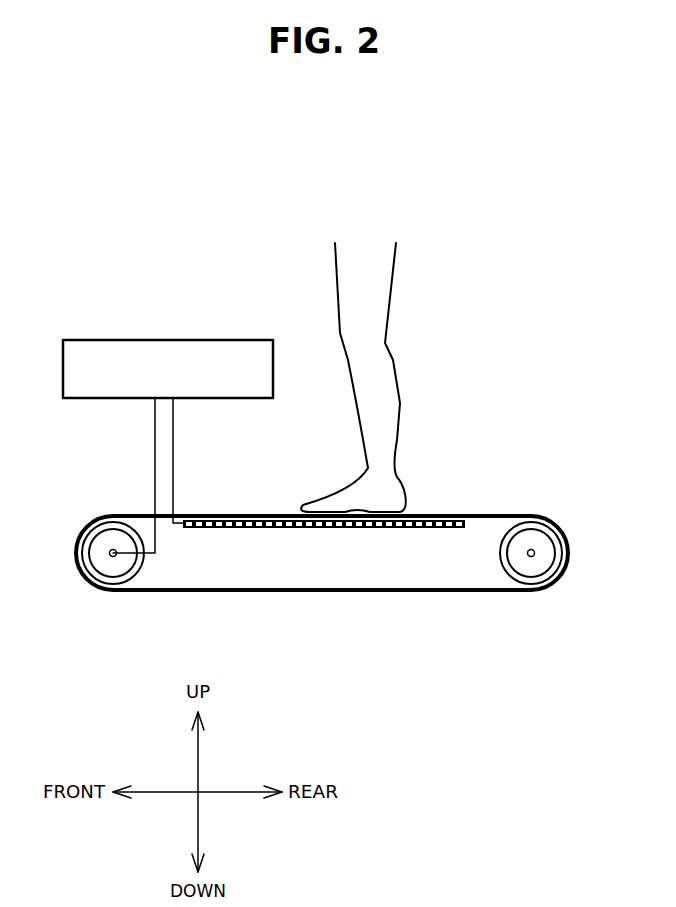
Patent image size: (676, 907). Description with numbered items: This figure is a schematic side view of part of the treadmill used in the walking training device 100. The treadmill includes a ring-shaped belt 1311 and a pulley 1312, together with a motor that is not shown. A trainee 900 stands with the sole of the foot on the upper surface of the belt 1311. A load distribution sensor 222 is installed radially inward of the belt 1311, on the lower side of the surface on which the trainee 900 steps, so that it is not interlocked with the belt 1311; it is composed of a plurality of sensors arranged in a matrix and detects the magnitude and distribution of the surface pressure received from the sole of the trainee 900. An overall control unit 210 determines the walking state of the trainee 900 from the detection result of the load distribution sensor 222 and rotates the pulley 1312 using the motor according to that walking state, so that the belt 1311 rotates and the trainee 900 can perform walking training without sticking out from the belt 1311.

The walking training device 100 is at (298, 138).
The overall control unit 210 is at (165, 340).
The load distribution sensor 222 is at (402, 529).
The trainee 900 is at (373, 245).
The belt 1311 is at (495, 514).
The pulley 1312 is at (116, 570).